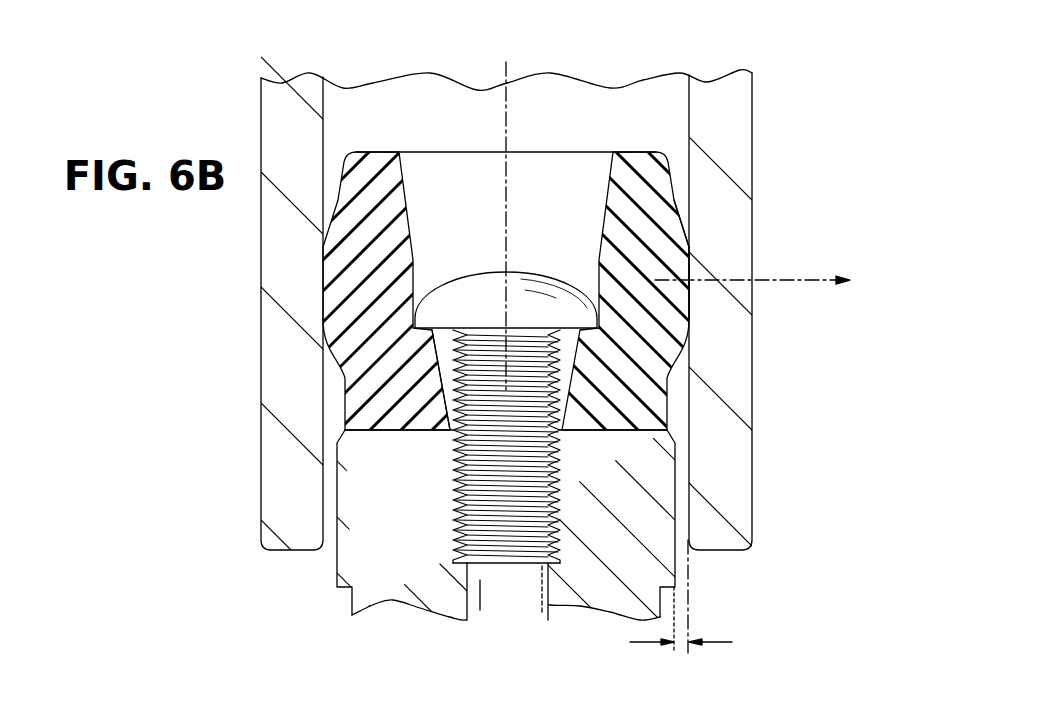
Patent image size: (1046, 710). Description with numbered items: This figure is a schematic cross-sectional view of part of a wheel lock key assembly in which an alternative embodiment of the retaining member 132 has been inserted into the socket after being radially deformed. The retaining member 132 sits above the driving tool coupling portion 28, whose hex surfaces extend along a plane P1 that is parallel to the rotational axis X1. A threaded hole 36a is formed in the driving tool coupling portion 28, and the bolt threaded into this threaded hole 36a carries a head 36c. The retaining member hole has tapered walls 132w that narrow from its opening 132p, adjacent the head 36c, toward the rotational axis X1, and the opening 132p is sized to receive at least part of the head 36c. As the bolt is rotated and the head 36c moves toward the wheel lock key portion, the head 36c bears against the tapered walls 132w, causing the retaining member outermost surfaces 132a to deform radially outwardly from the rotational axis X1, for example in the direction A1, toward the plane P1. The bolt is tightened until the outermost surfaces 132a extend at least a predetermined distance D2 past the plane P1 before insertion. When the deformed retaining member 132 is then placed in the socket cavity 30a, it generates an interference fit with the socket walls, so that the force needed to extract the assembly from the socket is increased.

The retaining member 132 is at (367, 163).
The opening of the retaining member hole 132p is at (599, 152).
The retaining member outermost surfaces 132a is at (678, 220).
The tapered walls 132w is at (430, 367).
The head of the bolt 36c is at (489, 282).
The threaded hole 36a is at (658, 587).
The socket cavity 30a is at (685, 422).
The driving tool coupling portion 28 is at (385, 560).
The rotational axis X1 is at (510, 113).
The direction A1 is at (811, 285).
The plane P1 is at (665, 624).
The predetermined distance D2 is at (720, 643).